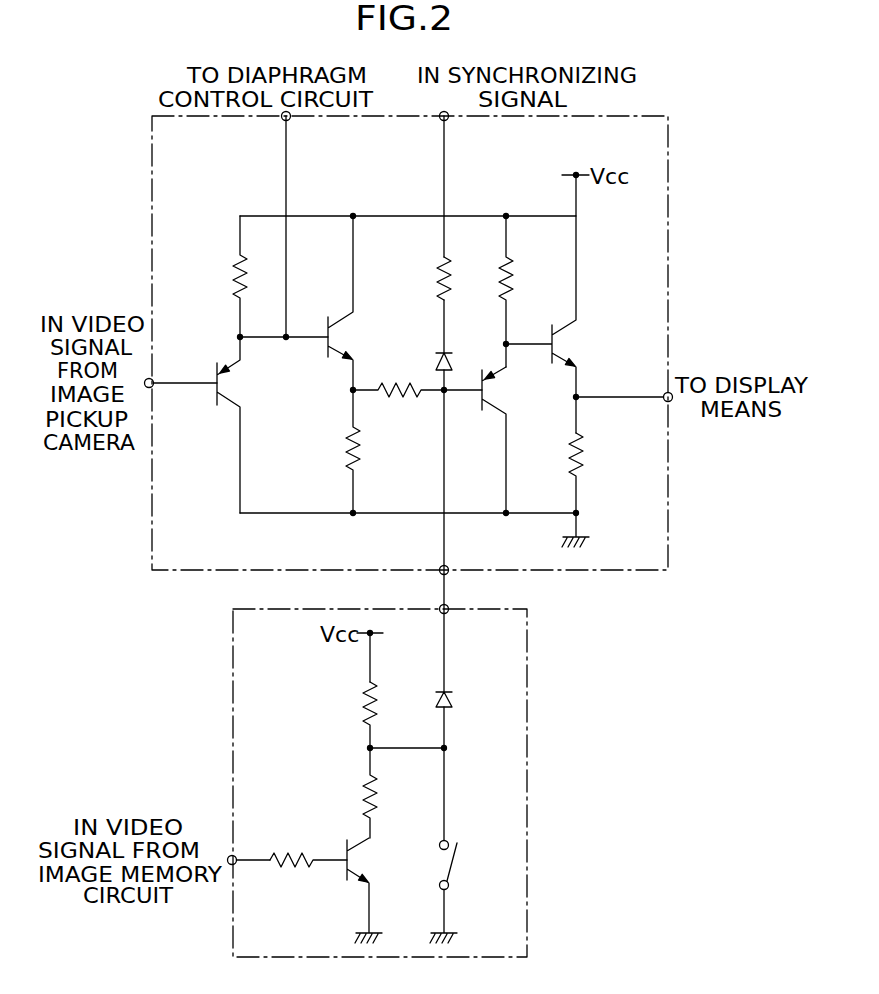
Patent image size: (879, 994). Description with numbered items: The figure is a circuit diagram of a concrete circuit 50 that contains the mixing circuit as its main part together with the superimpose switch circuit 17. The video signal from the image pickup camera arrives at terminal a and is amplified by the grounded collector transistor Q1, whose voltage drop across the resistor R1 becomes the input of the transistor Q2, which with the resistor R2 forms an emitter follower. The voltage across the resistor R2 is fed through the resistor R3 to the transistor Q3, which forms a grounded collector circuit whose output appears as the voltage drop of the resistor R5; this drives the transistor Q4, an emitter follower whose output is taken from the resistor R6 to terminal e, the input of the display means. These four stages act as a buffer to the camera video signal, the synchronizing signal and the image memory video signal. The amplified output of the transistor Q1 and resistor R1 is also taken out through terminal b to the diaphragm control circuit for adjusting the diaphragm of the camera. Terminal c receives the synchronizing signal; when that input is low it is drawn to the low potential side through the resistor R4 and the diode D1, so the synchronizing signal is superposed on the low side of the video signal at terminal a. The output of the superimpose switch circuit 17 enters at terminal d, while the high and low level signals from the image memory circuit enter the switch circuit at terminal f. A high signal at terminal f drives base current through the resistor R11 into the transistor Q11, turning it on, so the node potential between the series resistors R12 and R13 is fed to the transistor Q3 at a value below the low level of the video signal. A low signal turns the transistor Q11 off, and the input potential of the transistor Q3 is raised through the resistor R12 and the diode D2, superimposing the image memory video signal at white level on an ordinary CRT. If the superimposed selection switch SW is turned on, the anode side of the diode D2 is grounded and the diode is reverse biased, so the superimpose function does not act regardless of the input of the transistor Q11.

The circuit 50 is at (574, 571).
The superimpose switch circuit 17 is at (527, 757).
The resistor R1 is at (225, 276).
The resistor R2 is at (335, 451).
The resistor R3 is at (417, 405).
The resistor R4 is at (428, 278).
The resistor R5 is at (493, 291).
The resistor R6 is at (559, 473).
The resistor R11 is at (308, 849).
The resistor R12 is at (349, 715).
The resistor R13 is at (350, 793).
The transistor Q1 is at (244, 425).
The transistor Q2 is at (355, 303).
The transistor Q3 is at (510, 440).
The transistor Q4 is at (557, 324).
The transistor Q11 is at (378, 890).
The diode D1 is at (432, 356).
The diode D2 is at (459, 706).
The superimposed selection switch SW is at (458, 892).
The terminal a is at (181, 396).
The terminal b is at (292, 130).
The terminal c is at (452, 129).
The terminal d is at (453, 588).
The terminal e is at (624, 406).
The terminal f is at (249, 848).